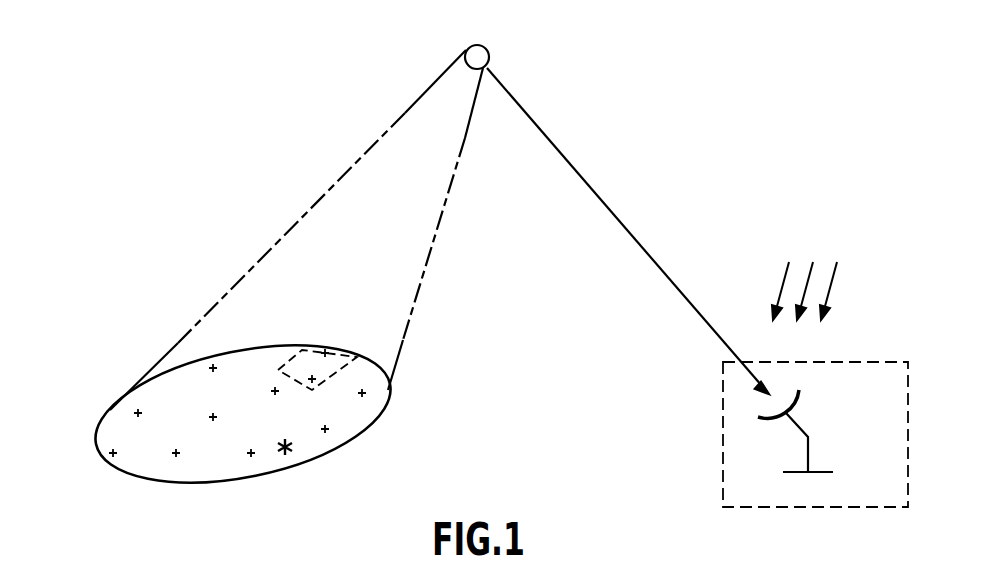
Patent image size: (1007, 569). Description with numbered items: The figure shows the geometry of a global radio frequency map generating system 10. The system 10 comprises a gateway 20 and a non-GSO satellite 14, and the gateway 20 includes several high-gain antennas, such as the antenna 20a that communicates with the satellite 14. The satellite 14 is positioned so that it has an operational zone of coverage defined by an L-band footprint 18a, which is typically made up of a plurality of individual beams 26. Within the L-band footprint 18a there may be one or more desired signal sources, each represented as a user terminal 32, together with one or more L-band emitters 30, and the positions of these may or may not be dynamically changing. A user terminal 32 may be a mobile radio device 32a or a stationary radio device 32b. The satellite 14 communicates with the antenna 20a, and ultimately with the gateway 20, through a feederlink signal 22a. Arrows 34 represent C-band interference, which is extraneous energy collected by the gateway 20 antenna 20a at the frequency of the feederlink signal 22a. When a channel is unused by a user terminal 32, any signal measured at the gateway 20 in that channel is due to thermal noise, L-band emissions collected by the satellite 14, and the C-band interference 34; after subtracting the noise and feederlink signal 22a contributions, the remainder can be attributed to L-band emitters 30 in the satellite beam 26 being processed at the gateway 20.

The global radio frequency map generating system 10 is at (792, 185).
The non-GSO satellite 14 is at (485, 46).
The L-band footprint 18a is at (107, 417).
The gateway 20 is at (722, 462).
The antenna 20a is at (797, 420).
The feederlink signal 22a is at (585, 180).
The individual beam 26 is at (304, 372).
The L-band emitter 30 is at (287, 453).
The user terminal 32 is at (212, 363).
The mobile radio device 32a is at (250, 458).
The stationary radio device 32b is at (213, 422).
The C-band interference 34 is at (835, 276).